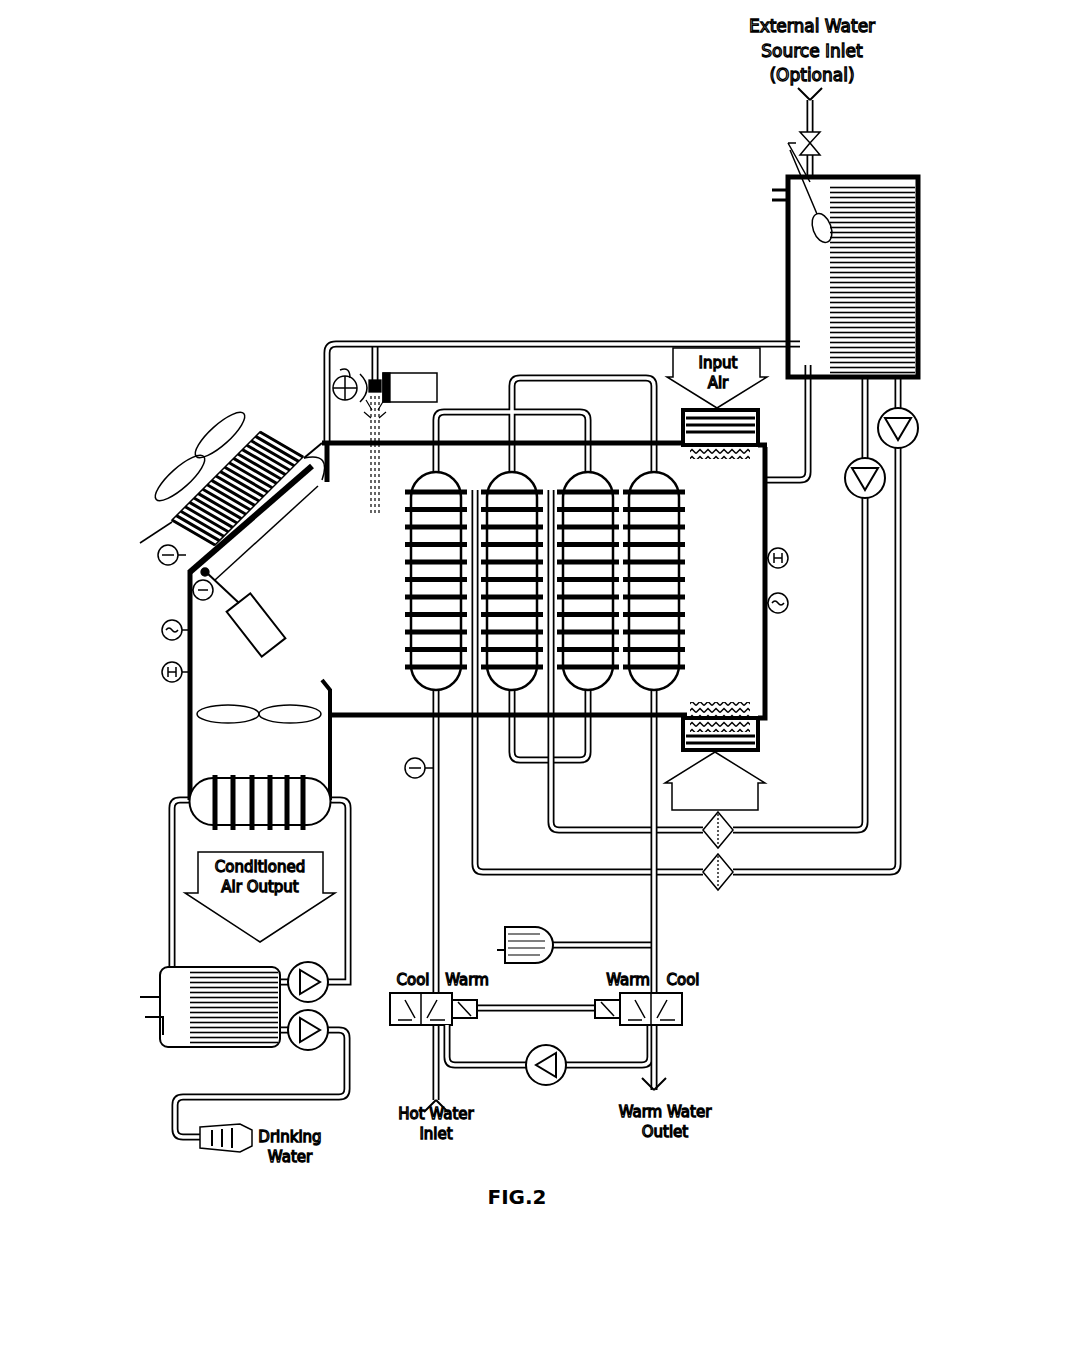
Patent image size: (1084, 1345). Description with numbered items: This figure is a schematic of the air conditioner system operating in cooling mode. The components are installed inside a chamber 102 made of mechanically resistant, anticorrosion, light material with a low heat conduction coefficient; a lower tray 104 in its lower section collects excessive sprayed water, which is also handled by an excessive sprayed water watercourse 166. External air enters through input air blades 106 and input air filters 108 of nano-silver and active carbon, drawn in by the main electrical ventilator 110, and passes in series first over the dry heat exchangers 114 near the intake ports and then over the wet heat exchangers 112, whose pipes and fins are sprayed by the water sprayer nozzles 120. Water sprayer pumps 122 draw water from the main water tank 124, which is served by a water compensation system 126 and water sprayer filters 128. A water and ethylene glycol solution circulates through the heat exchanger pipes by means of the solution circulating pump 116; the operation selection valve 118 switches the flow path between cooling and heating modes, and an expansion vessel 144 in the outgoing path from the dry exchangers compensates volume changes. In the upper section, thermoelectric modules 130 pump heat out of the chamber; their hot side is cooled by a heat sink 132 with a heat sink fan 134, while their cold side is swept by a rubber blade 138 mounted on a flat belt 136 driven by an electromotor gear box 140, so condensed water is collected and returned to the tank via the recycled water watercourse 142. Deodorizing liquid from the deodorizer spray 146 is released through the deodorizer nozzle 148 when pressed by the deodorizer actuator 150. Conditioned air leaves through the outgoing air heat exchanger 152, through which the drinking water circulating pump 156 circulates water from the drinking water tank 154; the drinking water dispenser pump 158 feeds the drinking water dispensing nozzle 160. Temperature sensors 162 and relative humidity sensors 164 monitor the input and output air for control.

The chamber 102 is at (355, 714).
The lower tray 104 is at (767, 653).
The input air blades 106 is at (722, 702).
The input air filters 108 is at (758, 740).
The main electrical ventilator 110 is at (290, 710).
The wet heat exchangers 112 is at (400, 607).
The dry heat exchangers 114 is at (676, 565).
The solution circulating pump 116 is at (538, 1085).
The operation selection valve 118 is at (392, 1010).
The water sprayer nozzles 120 is at (474, 478).
The water sprayer pumps 122 is at (855, 475).
The main water tank 124 is at (877, 190).
The water compensation system 126 is at (815, 235).
The water sprayer filters 128 is at (720, 890).
The thermoelectric modules 130 is at (262, 540).
The heat sink 132 is at (165, 545).
The heat sink fan 134 is at (228, 425).
The flat belt 136 is at (298, 448).
The rubber blade 138 is at (303, 500).
The electromotor gear box 140 is at (263, 648).
The recycled water watercourse 142 is at (320, 350).
The expansion vessel 144 is at (503, 940).
The deodorizer spray 146 is at (395, 378).
The deodorizer nozzle 148 is at (375, 380).
The deodorizer actuator 150 is at (345, 368).
The outgoing air heat exchanger 152 is at (195, 820).
The drinking water tank 154 is at (170, 1020).
The drinking water circulating pump 156 is at (306, 968).
The drinking water dispenser pump 158 is at (300, 1042).
The drinking water dispensing nozzle 160 is at (190, 1140).
The temperature sensors 162 is at (790, 605).
The relative humidity sensors 164 is at (790, 560).
The excessive sprayed water watercourse 166 is at (783, 478).